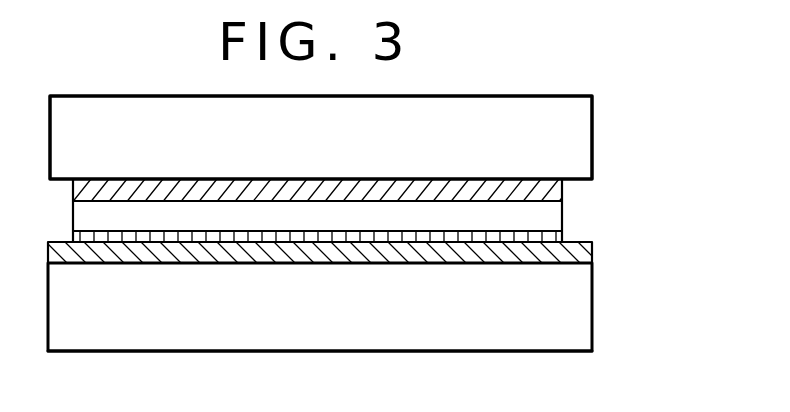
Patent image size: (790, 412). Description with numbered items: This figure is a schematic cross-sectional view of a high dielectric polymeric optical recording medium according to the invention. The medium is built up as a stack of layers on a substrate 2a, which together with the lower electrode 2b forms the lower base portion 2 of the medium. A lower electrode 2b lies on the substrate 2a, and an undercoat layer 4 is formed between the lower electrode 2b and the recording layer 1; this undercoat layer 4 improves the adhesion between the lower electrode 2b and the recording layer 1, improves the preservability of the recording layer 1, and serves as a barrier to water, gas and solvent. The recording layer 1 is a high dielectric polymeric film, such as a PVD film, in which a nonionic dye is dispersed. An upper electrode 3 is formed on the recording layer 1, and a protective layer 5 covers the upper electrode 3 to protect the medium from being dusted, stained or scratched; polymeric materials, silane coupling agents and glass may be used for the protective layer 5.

The protective layer 5 is at (585, 105).
The upper electrode 3 is at (563, 190).
The recording layer 1 is at (563, 214).
The undercoat layer 4 is at (563, 237).
The lower electrode 2b is at (594, 240).
The lower substrate 2 is at (622, 355).
The substrate 2a is at (573, 337).